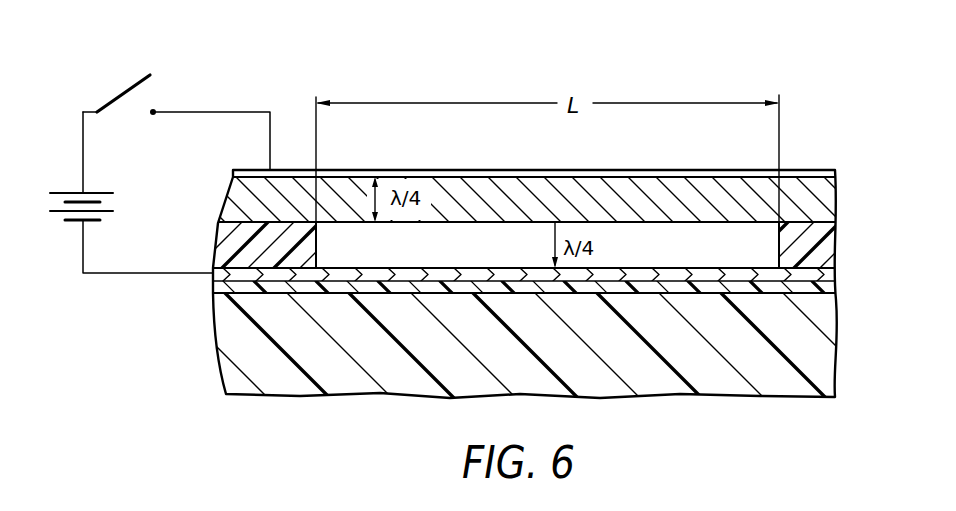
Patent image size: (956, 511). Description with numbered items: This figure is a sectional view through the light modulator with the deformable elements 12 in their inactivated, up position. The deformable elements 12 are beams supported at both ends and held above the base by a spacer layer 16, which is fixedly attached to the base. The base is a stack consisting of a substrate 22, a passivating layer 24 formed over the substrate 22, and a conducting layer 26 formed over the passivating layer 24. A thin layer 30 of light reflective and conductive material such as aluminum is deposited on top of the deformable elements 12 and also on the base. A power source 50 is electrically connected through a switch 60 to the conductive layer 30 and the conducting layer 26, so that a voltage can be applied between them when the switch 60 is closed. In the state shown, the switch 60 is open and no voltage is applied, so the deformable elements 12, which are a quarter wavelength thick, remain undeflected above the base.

The deformable element 12 is at (835, 197).
The spacer layer 16 is at (226, 248).
The substrate 22 is at (828, 330).
The passivating layer 24 is at (842, 285).
The conducting layer 26 is at (840, 273).
The thin layer of light reflective and conductive material 30 is at (798, 168).
The power source 50 is at (74, 233).
The switch 60 is at (118, 95).